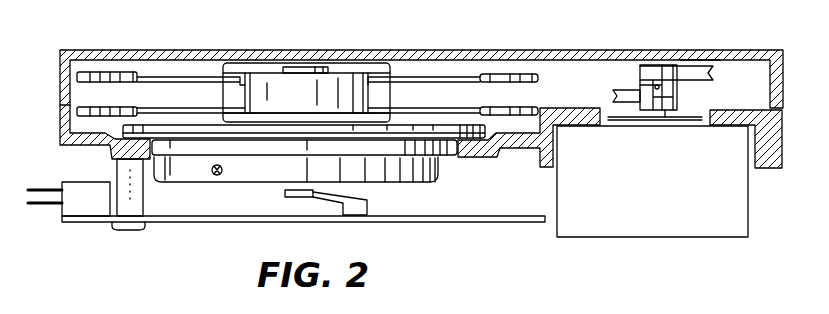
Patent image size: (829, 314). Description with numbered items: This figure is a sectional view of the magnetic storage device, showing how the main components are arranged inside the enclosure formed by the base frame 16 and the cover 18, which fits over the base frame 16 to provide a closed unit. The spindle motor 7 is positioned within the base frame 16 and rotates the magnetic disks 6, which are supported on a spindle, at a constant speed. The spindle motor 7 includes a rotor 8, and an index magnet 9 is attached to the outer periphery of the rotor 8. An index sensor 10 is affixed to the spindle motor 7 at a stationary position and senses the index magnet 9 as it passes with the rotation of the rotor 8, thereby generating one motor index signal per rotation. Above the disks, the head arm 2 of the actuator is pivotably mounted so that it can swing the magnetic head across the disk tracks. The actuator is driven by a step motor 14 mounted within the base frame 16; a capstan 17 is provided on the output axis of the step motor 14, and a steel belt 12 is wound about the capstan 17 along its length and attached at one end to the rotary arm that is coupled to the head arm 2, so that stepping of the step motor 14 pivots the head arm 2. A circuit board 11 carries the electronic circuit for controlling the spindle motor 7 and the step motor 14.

The head arm 2 is at (347, 90).
The magnetic disk 6 is at (137, 77).
The spindle motor 7 is at (197, 133).
The rotor 8 is at (385, 172).
The index magnet 9 is at (220, 178).
The index sensor 10 is at (160, 162).
The circuit board 11 is at (287, 222).
The steel belt 12 is at (688, 67).
The step motor 14 is at (650, 223).
The base frame 16 is at (488, 152).
The capstan 17 is at (698, 58).
The cover 18 is at (184, 56).